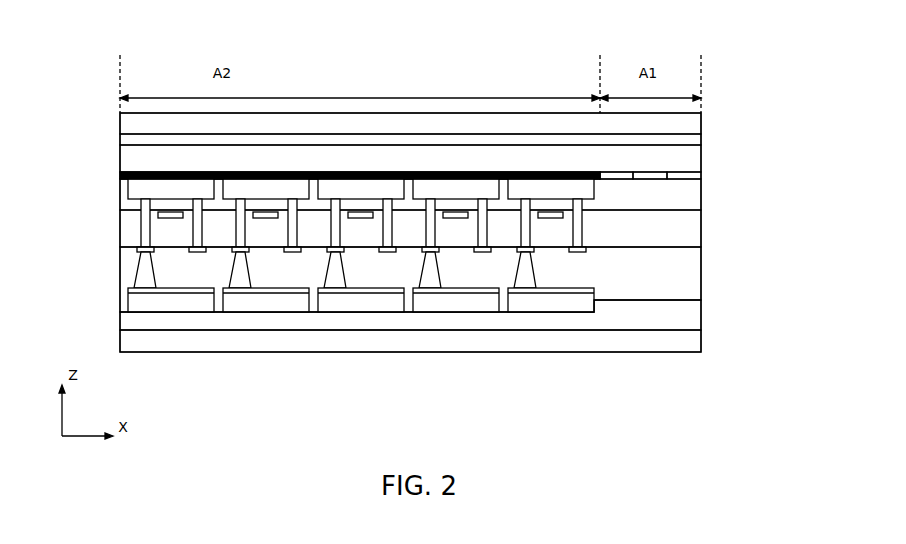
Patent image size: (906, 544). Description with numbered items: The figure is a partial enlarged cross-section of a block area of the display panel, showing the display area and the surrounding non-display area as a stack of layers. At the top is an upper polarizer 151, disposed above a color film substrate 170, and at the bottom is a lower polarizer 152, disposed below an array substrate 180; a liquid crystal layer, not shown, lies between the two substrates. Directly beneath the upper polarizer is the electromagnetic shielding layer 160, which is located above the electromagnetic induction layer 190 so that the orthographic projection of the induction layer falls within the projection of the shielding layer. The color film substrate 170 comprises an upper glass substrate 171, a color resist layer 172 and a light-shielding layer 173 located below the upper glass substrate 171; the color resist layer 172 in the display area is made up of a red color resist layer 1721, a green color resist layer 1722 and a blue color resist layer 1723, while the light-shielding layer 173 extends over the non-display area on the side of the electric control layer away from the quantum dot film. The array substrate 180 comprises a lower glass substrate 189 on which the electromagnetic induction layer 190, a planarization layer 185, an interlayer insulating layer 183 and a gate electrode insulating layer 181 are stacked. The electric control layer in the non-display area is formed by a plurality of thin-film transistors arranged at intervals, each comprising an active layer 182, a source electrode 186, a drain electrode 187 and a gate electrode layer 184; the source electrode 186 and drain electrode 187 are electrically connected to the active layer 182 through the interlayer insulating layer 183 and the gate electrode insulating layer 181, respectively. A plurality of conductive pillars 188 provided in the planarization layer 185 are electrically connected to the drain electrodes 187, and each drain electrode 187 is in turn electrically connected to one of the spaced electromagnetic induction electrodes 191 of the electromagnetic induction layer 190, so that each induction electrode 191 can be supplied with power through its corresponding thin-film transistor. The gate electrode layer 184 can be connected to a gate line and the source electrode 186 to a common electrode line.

The upper polarizer 151 is at (120, 119).
The electromagnetic shielding layer 160 is at (120, 139).
The upper glass substrate 171 is at (120, 160).
The color resist layer 172 is at (709, 120).
The red color resist layer 1721 is at (608, 172).
The green color resist layer 1722 is at (642, 172).
The blue color resist layer 1723 is at (675, 172).
The color film substrate 170 is at (436, 121).
The light-shielding layer 173 is at (462, 172).
The array substrate 180 is at (413, 290).
The gate electrode insulating layer 181 is at (120, 179).
The active layer 182 is at (120, 197).
The interlayer insulating layer 183 is at (120, 215).
The gate electrode layer 184 is at (158, 218).
The planarization layer 185 is at (120, 263).
The source electrode 186 is at (197, 250).
The drain electrode 187 is at (126, 293).
The conductive pillar 188 is at (147, 270).
The lower glass substrate 189 is at (120, 318).
The electromagnetic induction layer 190 is at (313, 355).
The electromagnetic induction electrode 191 is at (333, 300).
The lower polarizer 152 is at (701, 338).